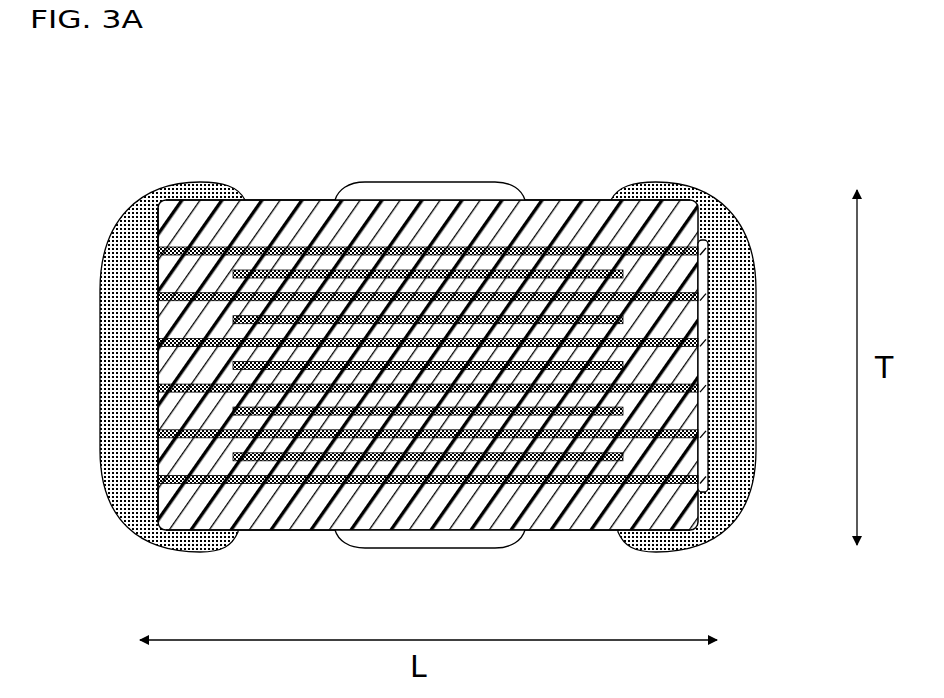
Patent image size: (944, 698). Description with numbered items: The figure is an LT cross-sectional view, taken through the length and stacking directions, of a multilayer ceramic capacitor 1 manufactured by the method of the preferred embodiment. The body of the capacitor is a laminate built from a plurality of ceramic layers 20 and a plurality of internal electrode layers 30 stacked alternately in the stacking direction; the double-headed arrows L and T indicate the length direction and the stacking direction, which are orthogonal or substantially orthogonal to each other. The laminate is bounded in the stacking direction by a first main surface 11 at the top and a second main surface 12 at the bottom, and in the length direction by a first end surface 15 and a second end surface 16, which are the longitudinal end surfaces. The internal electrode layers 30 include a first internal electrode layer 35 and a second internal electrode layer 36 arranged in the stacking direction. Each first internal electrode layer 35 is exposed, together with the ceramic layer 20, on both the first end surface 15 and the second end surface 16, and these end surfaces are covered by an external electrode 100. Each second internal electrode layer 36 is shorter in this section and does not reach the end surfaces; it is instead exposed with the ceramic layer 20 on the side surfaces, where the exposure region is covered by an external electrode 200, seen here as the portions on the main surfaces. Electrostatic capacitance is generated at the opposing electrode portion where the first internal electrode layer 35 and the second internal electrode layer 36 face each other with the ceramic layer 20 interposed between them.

The multilayer ceramic capacitor 1 is at (315, 117).
The external electrode 100 is at (147, 179).
The first main surface 11 is at (282, 200).
The second main surface 12 is at (300, 533).
The first end surface 15 is at (160, 452).
The second end surface 16 is at (705, 450).
The ceramic layer 20 is at (528, 288).
The internal electrode layer 30 is at (420, 429).
The first internal electrode layer 35 is at (230, 483).
The second internal electrode layer 36 is at (535, 456).
The external electrode (first external electrode) 200 is at (437, 190).